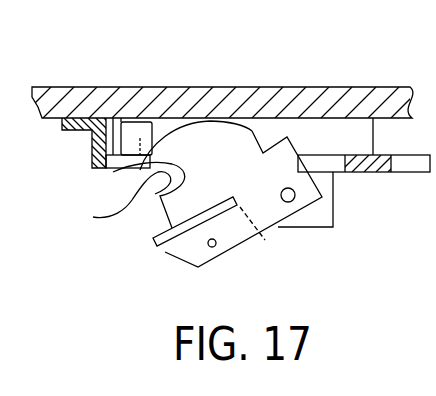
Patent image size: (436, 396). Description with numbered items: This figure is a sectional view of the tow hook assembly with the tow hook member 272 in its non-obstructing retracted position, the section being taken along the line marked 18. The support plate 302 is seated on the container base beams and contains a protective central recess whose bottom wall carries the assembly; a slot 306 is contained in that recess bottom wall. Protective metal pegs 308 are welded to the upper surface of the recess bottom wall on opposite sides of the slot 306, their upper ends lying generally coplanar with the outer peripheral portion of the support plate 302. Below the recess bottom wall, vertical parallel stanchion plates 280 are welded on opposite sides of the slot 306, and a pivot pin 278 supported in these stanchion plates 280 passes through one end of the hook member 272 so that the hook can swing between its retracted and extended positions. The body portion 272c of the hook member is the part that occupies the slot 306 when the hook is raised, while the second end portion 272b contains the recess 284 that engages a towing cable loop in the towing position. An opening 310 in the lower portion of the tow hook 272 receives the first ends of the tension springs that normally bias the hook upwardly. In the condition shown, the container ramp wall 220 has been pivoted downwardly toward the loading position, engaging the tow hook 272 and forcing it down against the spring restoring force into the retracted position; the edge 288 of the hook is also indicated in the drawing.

The section line 18- 18 is at (103, 42).
The container ramp wall 220 is at (47, 95).
The support plate 302 is at (87, 107).
The protective metal pegs 308 is at (140, 127).
The tow hook member 272 is at (188, 147).
The body portion of the hook member 272c is at (208, 150).
The second end portion of the hook member 272b is at (140, 170).
The recess 284 is at (114, 203).
The edge 288 is at (153, 241).
The opening 310 is at (207, 244).
The pivot pin 278 is at (291, 201).
The slot 306 is at (330, 165).
The stanchion plates 280 is at (323, 215).